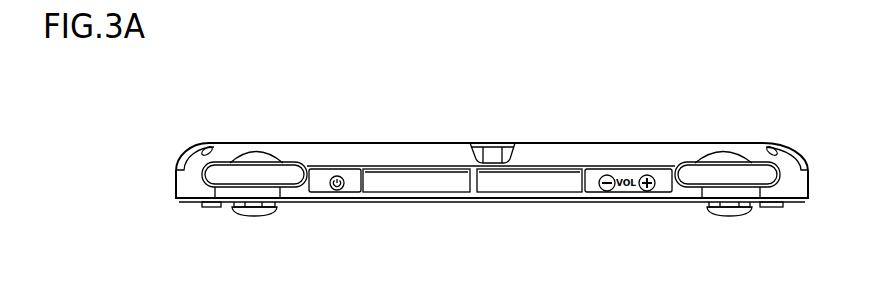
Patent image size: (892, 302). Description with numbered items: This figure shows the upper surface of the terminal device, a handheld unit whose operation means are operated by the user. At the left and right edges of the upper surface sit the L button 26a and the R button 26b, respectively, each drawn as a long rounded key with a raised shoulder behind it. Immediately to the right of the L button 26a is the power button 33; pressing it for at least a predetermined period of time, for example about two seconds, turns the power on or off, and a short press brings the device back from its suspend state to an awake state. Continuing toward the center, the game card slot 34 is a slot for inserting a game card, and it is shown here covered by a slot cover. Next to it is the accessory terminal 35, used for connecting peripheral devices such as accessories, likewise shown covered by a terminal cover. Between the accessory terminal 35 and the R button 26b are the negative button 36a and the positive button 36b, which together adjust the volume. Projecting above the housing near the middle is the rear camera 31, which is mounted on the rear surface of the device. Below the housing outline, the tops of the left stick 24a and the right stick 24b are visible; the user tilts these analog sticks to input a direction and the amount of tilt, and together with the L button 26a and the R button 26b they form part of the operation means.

The left stick 24a is at (252, 214).
The right stick 24b is at (727, 214).
The L button 26a is at (267, 173).
The R button 26b is at (738, 175).
The rear camera 31 is at (492, 153).
The power button 33 is at (337, 193).
The game card slot 34 is at (417, 190).
The accessory terminal 35 is at (530, 190).
The negative button 36a is at (607, 192).
The positive button 36b is at (648, 168).